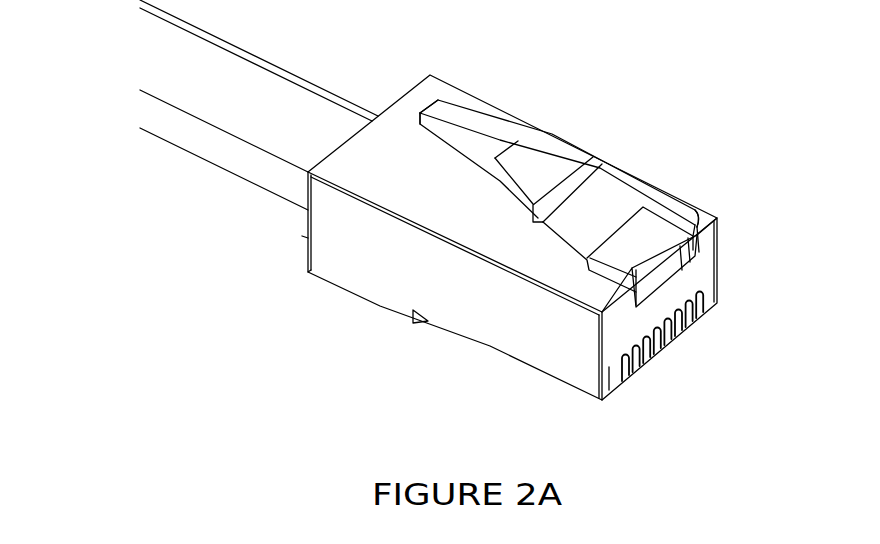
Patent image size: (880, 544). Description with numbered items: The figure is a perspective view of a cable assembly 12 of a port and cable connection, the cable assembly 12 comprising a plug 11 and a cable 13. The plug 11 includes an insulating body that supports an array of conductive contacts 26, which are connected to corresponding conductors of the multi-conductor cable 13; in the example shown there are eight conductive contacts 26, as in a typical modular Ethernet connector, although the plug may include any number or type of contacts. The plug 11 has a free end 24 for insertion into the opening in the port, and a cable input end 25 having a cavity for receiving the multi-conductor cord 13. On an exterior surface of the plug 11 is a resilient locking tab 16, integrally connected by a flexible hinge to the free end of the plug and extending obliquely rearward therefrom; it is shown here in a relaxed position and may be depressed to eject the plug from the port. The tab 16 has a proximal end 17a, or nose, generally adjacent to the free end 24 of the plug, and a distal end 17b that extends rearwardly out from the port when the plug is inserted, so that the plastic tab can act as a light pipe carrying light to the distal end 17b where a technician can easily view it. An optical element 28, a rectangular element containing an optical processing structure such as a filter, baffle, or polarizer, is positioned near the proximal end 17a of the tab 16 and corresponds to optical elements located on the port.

The plug 11 is at (462, 311).
The cable assembly 12 is at (308, 272).
The cable 13 is at (173, 143).
The tab 16 is at (508, 128).
The proximal end 17a is at (697, 214).
The distal end 17b is at (438, 102).
The free end 24 is at (603, 398).
The cable input end 25 is at (307, 238).
The conductive contacts 26 is at (667, 345).
The optical element 28 is at (686, 252).